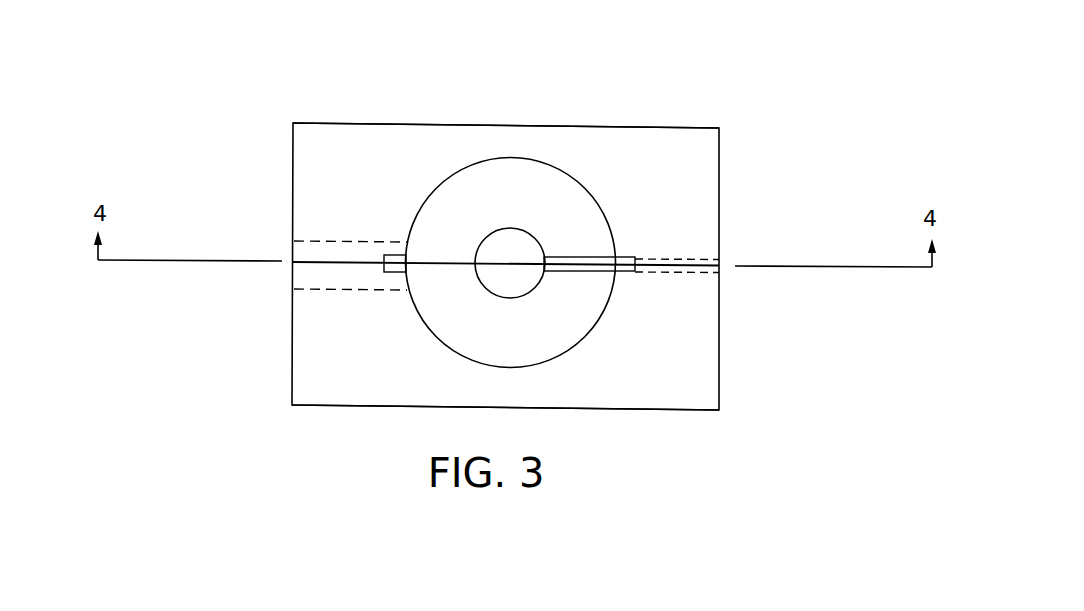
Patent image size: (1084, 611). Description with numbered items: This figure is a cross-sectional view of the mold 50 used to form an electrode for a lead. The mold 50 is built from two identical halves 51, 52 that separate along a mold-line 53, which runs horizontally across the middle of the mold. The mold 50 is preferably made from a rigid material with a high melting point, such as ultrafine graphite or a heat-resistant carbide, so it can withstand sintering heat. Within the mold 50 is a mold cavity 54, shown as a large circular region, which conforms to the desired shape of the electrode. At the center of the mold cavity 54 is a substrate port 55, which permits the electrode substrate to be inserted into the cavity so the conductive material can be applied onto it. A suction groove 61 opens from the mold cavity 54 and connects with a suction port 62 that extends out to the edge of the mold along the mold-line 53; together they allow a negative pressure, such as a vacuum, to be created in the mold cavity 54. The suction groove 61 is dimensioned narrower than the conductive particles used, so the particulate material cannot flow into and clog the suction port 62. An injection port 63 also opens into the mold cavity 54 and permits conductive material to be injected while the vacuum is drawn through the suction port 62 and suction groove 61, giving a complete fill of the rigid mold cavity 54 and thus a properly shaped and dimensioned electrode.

The mold 50 is at (724, 102).
The mold half 51 is at (313, 135).
The mold half 52 is at (330, 390).
The mold-line 53 is at (313, 262).
The mold cavity 54 is at (527, 168).
The substrate port 55 is at (530, 287).
The suction groove 61 is at (390, 255).
The suction port 62 is at (694, 276).
The injection port 63 is at (313, 283).